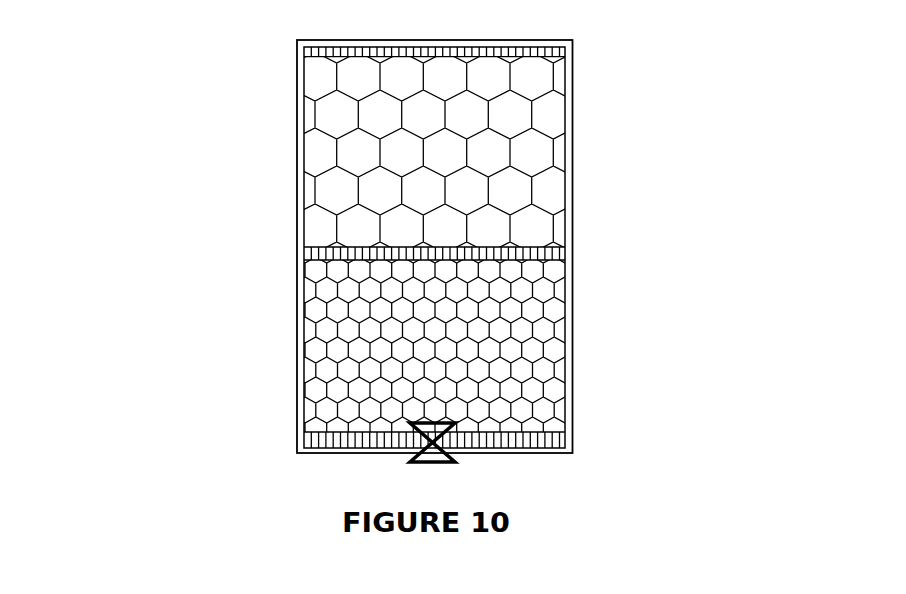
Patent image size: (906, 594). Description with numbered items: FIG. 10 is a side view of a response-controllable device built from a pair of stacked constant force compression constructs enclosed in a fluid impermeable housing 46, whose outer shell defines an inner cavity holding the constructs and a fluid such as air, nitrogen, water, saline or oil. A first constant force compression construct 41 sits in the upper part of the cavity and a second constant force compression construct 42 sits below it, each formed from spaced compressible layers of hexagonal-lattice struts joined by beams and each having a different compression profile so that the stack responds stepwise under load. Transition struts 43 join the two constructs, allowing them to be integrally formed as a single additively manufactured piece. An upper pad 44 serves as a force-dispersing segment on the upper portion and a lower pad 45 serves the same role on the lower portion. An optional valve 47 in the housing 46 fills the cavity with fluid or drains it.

The first constant force compression construct 41 is at (412, 212).
The second constant force compression construct 42 is at (340, 374).
The transition struts 43 is at (400, 254).
The upper pad 44 is at (447, 52).
The lower pad 45 is at (352, 438).
The fluid impermeable housing 46 is at (570, 330).
The valve 47 is at (432, 450).